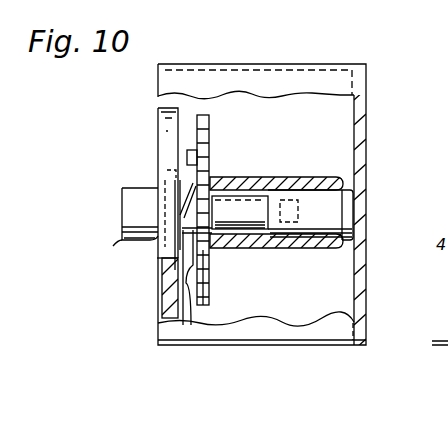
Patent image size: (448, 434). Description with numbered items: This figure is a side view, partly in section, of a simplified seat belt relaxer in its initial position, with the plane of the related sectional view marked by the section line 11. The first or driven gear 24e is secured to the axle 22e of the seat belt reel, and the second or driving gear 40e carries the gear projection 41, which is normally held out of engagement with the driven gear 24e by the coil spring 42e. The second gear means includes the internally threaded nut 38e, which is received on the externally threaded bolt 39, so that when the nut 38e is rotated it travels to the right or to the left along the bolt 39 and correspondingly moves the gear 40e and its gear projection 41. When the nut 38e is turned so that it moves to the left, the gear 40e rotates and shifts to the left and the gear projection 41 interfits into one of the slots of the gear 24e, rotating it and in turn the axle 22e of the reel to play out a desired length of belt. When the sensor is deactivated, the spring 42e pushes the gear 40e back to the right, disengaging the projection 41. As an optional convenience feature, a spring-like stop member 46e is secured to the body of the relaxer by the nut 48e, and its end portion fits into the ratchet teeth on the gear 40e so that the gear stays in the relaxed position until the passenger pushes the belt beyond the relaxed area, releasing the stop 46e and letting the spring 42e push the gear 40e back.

The section line 11 is at (349, 14).
The axle 22e is at (116, 235).
The driven gear 24e is at (157, 133).
The internally threaded nut 38e is at (313, 176).
The externally threaded bolt 39 is at (270, 250).
The driving gear 40e is at (210, 123).
The gear projection 41 is at (197, 146).
The coil spring 42e is at (200, 212).
The spring-like stop member 46e is at (163, 257).
The nut 48e is at (185, 322).